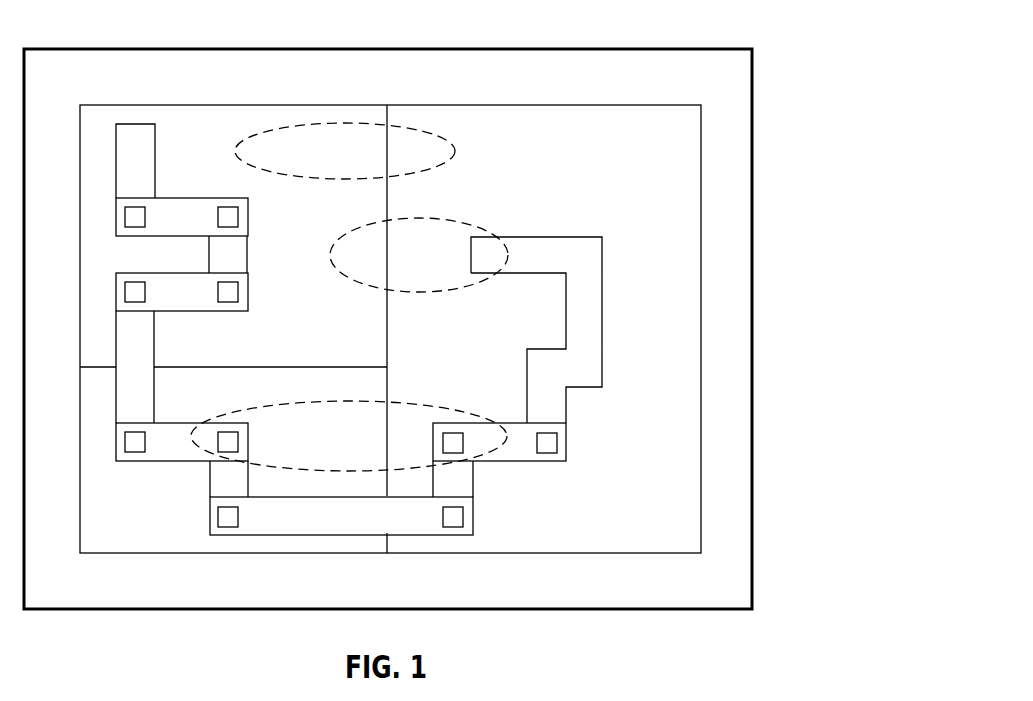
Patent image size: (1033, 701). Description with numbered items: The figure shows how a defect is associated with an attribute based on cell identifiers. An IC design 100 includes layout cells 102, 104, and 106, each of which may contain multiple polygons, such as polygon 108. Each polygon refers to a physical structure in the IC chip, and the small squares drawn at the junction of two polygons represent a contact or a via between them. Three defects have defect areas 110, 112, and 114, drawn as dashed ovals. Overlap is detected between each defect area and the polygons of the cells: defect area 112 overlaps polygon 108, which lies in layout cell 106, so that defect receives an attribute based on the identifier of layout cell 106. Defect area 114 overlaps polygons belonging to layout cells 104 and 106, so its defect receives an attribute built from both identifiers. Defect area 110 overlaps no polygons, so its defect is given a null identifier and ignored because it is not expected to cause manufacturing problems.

The IC design 100 is at (713, 49).
The layout cell 102 is at (98, 105).
The layout cell 104 is at (117, 555).
The layout cell 106 is at (583, 555).
The polygon 108 is at (527, 237).
The defect area 110 is at (456, 152).
The defect area 112 is at (343, 277).
The defect area 114 is at (423, 404).